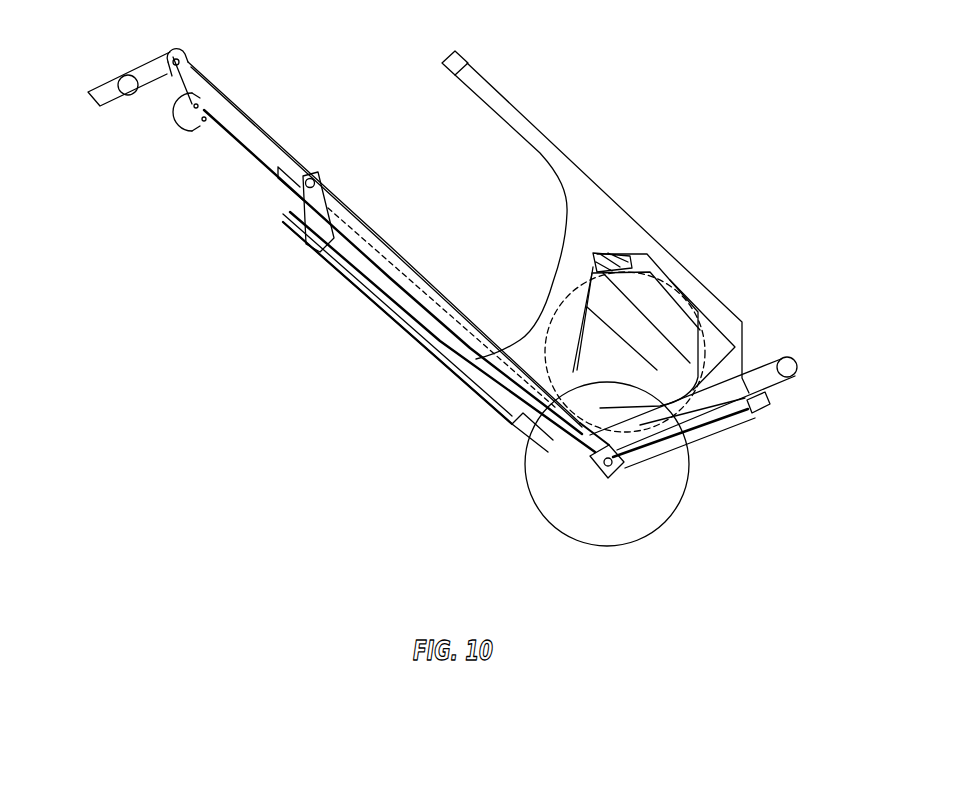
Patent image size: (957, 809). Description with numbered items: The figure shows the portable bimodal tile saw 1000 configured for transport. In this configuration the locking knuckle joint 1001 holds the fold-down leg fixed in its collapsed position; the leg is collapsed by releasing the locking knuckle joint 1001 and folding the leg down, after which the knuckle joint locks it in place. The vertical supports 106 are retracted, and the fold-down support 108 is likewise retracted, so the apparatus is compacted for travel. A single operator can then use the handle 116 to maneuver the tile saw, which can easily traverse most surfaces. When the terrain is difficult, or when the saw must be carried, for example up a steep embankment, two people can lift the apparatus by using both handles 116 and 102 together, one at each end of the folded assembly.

The hand truck in folded configuration 1000 is at (462, 296).
The locking knuckle joint 1001 is at (213, 122).
The handle 116 is at (113, 103).
The vertical supports 106 is at (400, 303).
The handle 102 is at (800, 364).
The fold-down support 108 is at (730, 417).